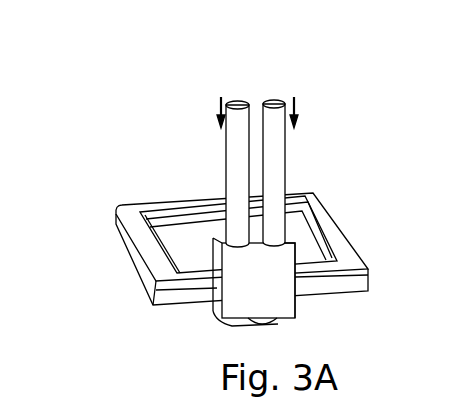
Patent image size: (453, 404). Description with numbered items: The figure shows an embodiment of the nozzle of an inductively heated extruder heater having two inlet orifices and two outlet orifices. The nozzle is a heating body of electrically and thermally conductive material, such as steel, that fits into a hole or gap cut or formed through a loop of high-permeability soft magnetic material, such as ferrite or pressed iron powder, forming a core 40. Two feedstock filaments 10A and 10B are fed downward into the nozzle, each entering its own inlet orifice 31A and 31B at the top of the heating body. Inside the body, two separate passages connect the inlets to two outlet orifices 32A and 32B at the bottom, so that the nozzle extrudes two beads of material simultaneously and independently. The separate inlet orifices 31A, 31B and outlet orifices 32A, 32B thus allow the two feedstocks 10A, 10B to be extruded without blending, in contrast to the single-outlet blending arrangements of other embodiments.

The feedstock filament 10A is at (239, 93).
The feedstock filament 10B is at (282, 93).
The inlet orifice 31A is at (250, 243).
The inlet orifice 31B is at (285, 242).
The outlet orifice 32A is at (241, 328).
The outlet orifice 32B is at (278, 323).
The core 40 is at (112, 208).